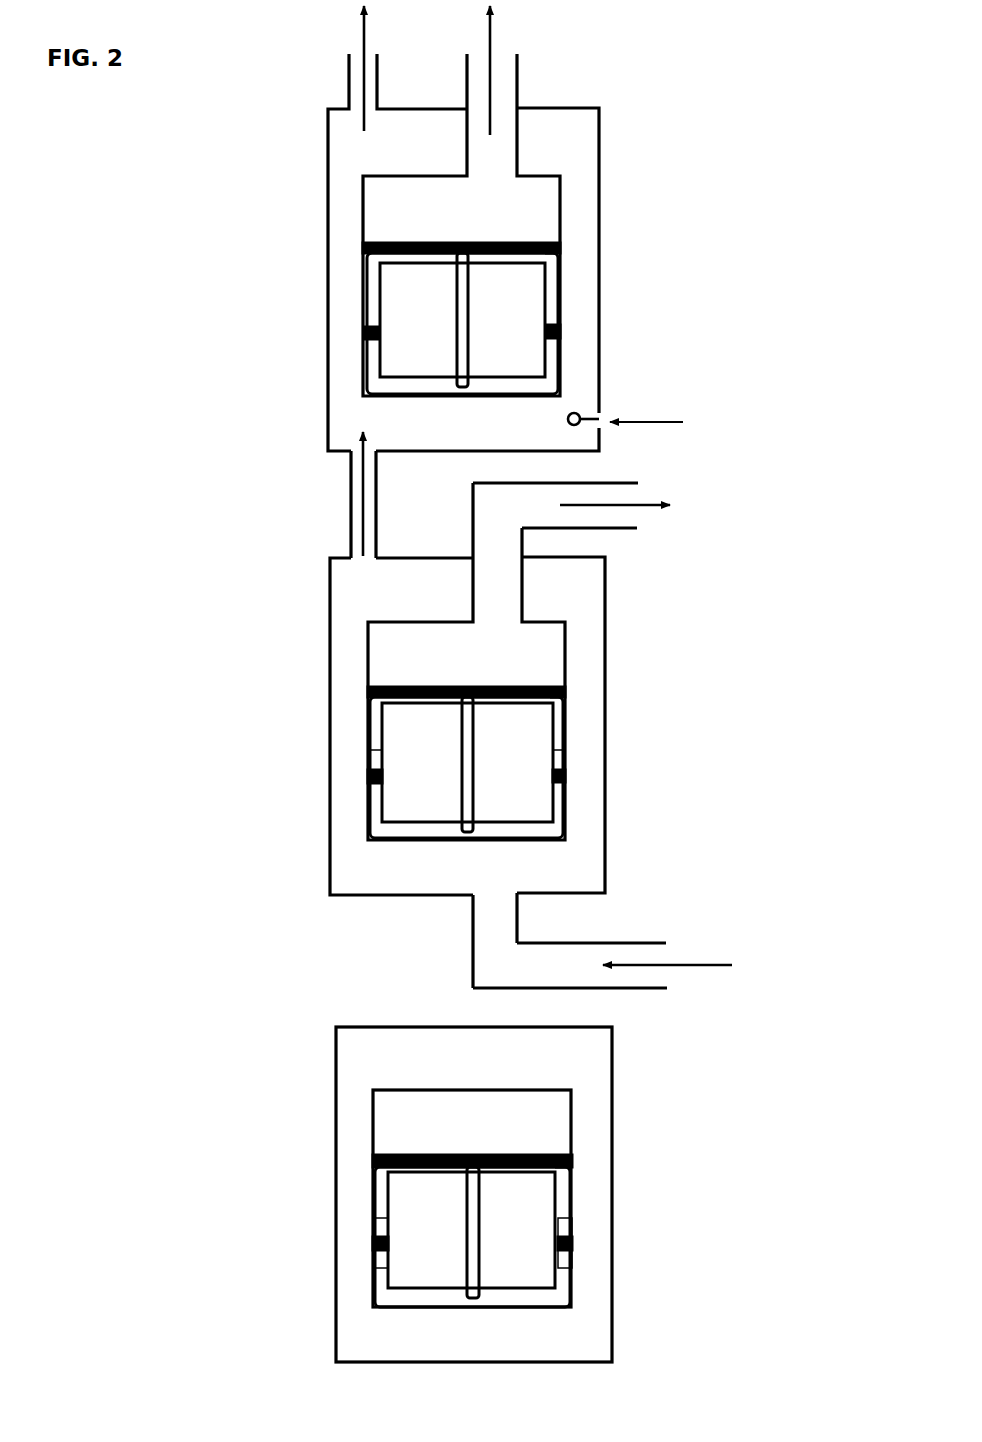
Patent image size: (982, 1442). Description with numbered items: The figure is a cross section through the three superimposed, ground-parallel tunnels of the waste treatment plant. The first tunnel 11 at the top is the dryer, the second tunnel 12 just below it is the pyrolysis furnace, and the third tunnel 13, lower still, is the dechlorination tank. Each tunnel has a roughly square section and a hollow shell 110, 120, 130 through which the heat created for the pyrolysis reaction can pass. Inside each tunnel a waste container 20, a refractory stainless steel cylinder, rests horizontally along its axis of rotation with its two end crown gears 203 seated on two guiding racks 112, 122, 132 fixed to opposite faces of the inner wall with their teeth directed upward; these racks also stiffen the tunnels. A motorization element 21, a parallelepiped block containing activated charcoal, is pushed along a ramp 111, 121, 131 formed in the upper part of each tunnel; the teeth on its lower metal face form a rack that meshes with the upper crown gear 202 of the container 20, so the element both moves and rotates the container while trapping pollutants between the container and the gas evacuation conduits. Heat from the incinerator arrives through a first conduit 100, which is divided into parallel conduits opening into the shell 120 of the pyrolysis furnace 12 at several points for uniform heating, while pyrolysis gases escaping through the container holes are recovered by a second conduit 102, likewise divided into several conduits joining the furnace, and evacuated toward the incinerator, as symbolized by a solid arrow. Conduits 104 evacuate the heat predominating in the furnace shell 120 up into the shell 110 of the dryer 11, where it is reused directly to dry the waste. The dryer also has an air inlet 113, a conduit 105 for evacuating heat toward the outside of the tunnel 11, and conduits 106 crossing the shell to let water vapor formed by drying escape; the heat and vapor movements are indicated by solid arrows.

The first tunnel 11 is at (300, 144).
The second tunnel 12 is at (317, 654).
The third tunnel 13 is at (313, 1103).
The container 20 is at (395, 306).
The motorization element 21 is at (560, 240).
The upper crown gear 202 is at (462, 295).
The end crown gear 203 is at (367, 320).
The heat evacuation conduit 104 is at (351, 513).
The heat evacuation conduit 105 is at (349, 80).
The water vapor evacuation conduit 106 is at (510, 87).
The hollow shell of dryer 110 is at (328, 207).
The ramp of dryer 111 is at (507, 262).
The guiding rack of dryer 112 is at (375, 335).
The air inlet 113 is at (599, 413).
The hollow shell of pyrolysis furnace 120 is at (330, 730).
The ramp of pyrolysis furnace 121 is at (382, 707).
The guiding rack of pyrolysis furnace 122 is at (382, 780).
The hollow shell of dechlorination tank 130 is at (375, 1195).
The ramp of dechlorination tank 131 is at (420, 1178).
The guiding rack of dechlorination tank 132 is at (388, 1247).
The second conduit 102 is at (612, 495).
The first conduit 100 is at (643, 952).